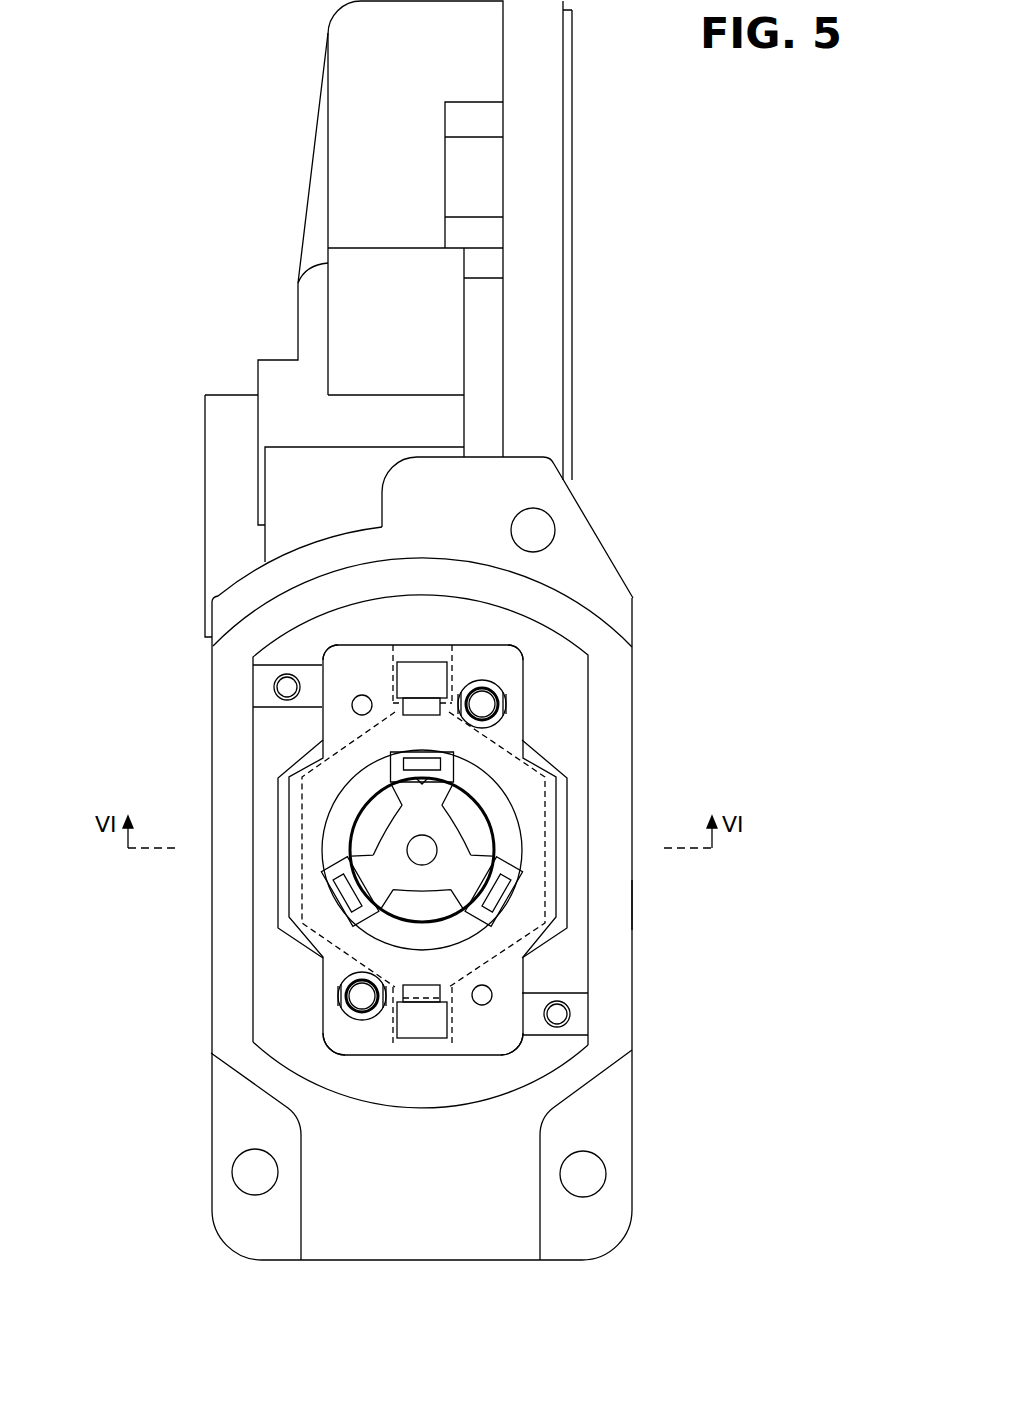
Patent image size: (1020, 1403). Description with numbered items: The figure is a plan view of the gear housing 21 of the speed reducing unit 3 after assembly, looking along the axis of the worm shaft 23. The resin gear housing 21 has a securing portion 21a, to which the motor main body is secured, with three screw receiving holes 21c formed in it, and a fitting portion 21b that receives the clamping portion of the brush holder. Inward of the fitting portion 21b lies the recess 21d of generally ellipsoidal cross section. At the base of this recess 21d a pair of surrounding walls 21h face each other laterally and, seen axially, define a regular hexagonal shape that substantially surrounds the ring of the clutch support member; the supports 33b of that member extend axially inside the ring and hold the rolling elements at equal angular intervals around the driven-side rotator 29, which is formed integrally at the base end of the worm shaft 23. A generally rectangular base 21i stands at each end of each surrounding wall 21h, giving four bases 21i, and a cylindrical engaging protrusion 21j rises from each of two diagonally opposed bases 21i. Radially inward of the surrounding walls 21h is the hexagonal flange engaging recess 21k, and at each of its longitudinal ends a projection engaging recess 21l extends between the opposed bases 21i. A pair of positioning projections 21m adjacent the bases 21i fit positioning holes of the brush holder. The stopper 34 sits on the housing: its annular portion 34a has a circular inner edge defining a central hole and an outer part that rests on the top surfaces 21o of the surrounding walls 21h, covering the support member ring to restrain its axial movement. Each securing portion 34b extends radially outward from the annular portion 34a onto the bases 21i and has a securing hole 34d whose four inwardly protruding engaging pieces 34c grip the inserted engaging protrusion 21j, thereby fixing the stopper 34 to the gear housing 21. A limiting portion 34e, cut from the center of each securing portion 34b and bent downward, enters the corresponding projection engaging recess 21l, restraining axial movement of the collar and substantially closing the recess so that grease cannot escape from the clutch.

The speed reducing unit 3 is at (645, 163).
The gear housing 21 is at (572, 353).
The securing portion 21a is at (612, 572).
The fitting portion 21b is at (620, 678).
The screw receiving hole 21c is at (548, 528).
The recess 21d is at (630, 902).
The surrounding wall 21h is at (283, 762).
The base 21i is at (334, 650).
The engaging protrusion 21j is at (480, 680).
The flange engaging recess 21k is at (300, 874).
The projection engaging recess 21l is at (411, 641).
The positioning projection 21m is at (276, 689).
The top surface 21o is at (281, 790).
The worm shaft 23 is at (470, 805).
The driven-side rotator 29 is at (368, 823).
The support 33b is at (392, 753).
The stopper 34 is at (560, 968).
The annular portion 34a is at (306, 898).
The securing portion 34b is at (455, 653).
The engaging piece 34c is at (506, 728).
The securing hole 34d is at (500, 703).
The limiting portion 34e is at (410, 690).